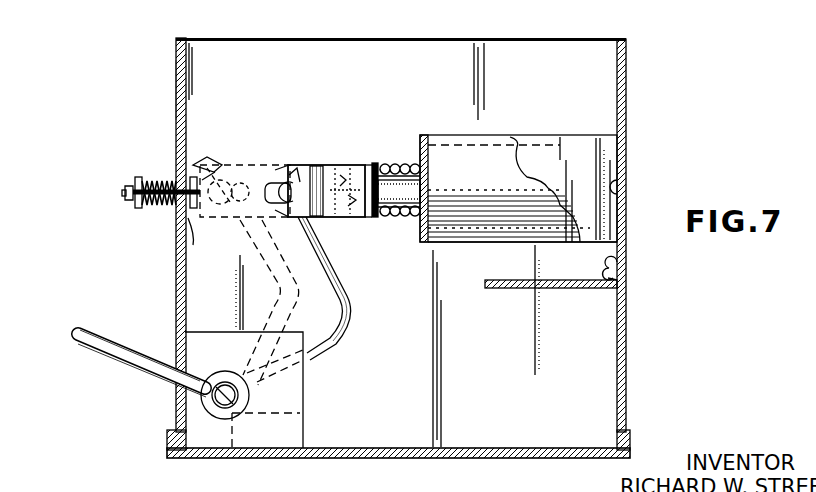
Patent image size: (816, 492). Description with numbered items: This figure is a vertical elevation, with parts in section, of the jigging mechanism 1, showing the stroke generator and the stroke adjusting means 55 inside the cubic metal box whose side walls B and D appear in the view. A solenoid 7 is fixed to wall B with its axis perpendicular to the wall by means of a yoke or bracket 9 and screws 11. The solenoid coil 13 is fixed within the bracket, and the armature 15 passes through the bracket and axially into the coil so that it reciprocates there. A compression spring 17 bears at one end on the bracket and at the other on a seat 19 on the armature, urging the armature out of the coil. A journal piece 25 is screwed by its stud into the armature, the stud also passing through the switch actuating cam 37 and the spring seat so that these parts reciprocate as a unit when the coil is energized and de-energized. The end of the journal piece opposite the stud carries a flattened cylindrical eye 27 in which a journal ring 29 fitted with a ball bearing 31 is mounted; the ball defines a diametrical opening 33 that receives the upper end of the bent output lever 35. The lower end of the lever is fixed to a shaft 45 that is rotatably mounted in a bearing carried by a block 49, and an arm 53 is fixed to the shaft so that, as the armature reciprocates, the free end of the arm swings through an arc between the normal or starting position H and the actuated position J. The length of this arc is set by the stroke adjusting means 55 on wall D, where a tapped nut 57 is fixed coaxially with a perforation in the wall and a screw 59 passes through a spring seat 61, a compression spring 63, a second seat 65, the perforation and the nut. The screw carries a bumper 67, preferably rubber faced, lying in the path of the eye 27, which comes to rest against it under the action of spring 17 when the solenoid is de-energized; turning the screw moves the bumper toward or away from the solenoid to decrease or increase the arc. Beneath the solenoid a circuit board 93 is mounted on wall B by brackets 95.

The jigging mechanism 1 is at (632, 57).
The side wall B is at (627, 106).
The side wall D is at (176, 98).
The solenoid 7 is at (557, 134).
The yoke or bracket 9 is at (522, 147).
The screws 11 is at (632, 187).
The solenoid coil 13 is at (474, 233).
The armature 15 is at (340, 220).
The compression spring 17 is at (396, 170).
The seat 19 is at (383, 218).
The journal piece 25 is at (340, 190).
The eye 27 is at (268, 192).
The journal ring 29 is at (268, 292).
The ball bearing 31 is at (298, 183).
The diametrical opening 33 is at (228, 176).
The bent output lever 35 is at (345, 330).
The switch actuating cam 37 is at (333, 165).
The shaft 45 is at (225, 400).
The block 49 is at (304, 400).
The arm 53 is at (118, 356).
The stroke adjusting means 55 is at (124, 205).
The tapped nut 57 is at (200, 210).
The screw 59 is at (136, 184).
The spring seat 61 is at (147, 182).
The compression spring 63 is at (165, 180).
The seat 65 is at (178, 218).
The bumper 67 is at (193, 242).
The circuit board 93 is at (560, 292).
The brackets 95 is at (620, 250).
The normal or starting position H is at (72, 334).
The actuated position J is at (174, 347).